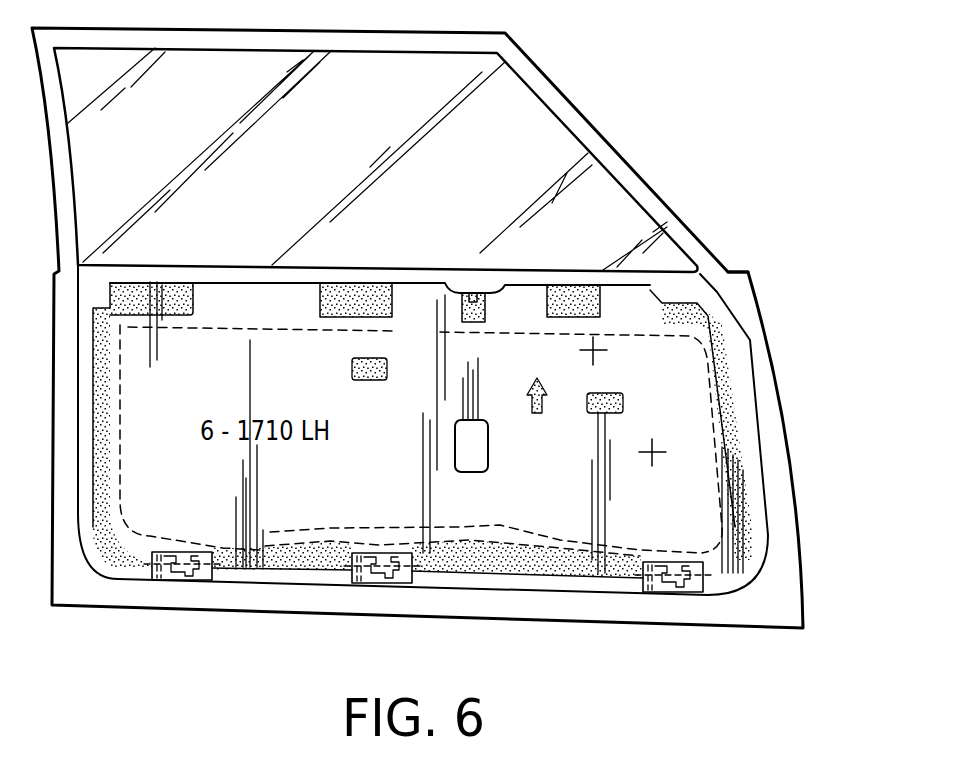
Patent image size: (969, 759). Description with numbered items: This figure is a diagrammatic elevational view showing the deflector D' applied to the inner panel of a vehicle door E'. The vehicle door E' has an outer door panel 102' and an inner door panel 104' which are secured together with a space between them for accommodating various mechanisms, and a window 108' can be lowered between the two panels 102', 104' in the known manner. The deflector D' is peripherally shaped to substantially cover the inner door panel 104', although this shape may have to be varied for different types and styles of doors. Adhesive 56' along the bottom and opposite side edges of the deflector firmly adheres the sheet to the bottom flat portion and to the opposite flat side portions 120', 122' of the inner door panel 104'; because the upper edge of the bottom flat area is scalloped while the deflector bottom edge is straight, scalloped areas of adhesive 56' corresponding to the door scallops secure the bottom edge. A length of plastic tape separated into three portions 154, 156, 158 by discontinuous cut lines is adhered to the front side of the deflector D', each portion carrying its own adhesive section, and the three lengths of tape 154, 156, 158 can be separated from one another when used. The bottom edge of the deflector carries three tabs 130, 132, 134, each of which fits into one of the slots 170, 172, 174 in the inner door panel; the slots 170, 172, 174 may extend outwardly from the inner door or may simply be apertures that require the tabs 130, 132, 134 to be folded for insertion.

The outer door panel 102' is at (402, 328).
The inner door panel 104' is at (416, 459).
The window 108' is at (376, 160).
The flat side portion 120' is at (97, 425).
The flat side portion 122' is at (748, 431).
The adhesive 56' is at (480, 440).
The tab 130 is at (182, 553).
The tab 132 is at (378, 553).
The tab 134 is at (672, 562).
The tape portion 154 is at (172, 580).
The tape portion 156 is at (358, 583).
The tape portion 158 is at (655, 592).
The slot 170 is at (185, 581).
The slot 172 is at (385, 583).
The slot 174 is at (680, 593).
The vehicle door E' is at (779, 277).
The deflector D' is at (427, 611).